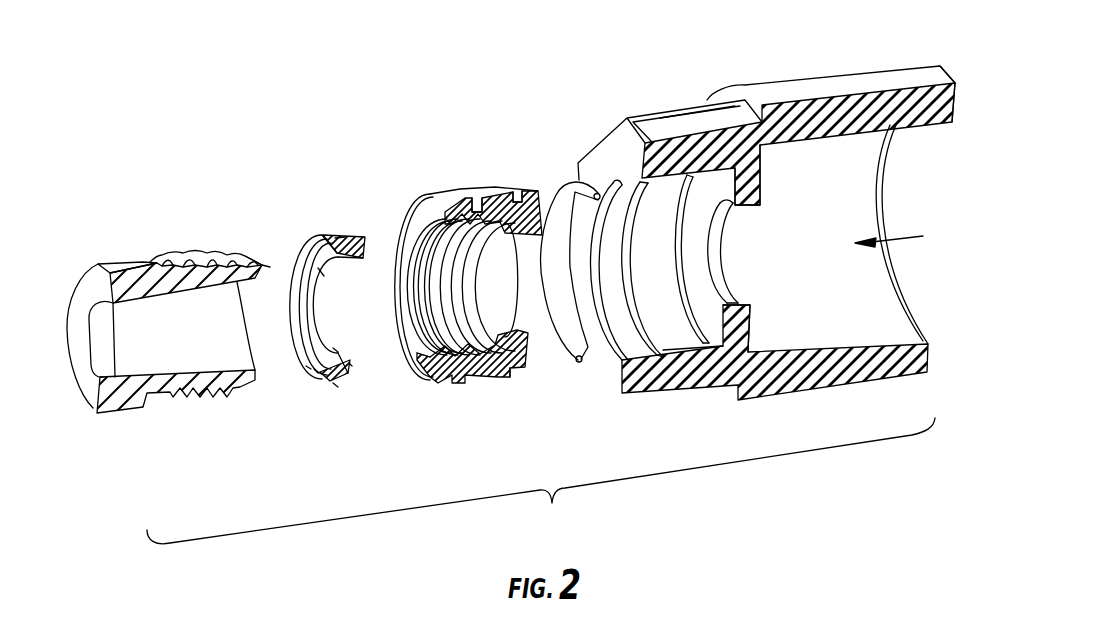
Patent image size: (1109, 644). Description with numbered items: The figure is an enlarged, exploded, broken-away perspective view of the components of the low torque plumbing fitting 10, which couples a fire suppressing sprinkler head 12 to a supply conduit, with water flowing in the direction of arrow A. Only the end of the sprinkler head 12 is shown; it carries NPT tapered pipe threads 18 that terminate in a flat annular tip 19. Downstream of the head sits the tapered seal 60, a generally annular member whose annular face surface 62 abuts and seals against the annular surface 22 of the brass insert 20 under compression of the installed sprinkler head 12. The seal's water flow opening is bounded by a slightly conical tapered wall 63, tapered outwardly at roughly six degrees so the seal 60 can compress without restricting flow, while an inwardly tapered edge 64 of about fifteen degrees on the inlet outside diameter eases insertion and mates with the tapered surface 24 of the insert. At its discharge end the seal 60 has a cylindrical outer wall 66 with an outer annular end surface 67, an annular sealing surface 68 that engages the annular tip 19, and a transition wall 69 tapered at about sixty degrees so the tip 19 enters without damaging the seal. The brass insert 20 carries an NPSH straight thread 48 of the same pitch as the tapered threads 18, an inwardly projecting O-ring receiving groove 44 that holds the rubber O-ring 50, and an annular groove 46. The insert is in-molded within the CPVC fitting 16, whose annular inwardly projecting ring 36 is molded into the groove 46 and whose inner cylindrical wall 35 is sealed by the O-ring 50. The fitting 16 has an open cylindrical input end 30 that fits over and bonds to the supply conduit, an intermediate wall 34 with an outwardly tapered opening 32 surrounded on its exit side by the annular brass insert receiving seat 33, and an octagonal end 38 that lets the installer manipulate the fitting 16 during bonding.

The low torque plumbing fitting 10 is at (541, 481).
The sprinkler head 12 is at (132, 243).
The CPVC fitting 16 is at (767, 81).
The NPT tapered pipe threads 18 is at (193, 257).
The flat annular tip 19 is at (270, 270).
The brass insert 20 is at (471, 386).
The annular surface 22 is at (507, 318).
The tapered surface 24 is at (506, 363).
The input end 30 is at (955, 97).
The opening 32 is at (733, 292).
The brass insert receiving seat 33 is at (735, 290).
The intermediate wall 34 is at (760, 181).
The inner cylindrical wall 35 is at (680, 333).
The annular inwardly projecting ring 36 is at (688, 195).
The octagonal end 38 is at (675, 123).
The O-ring receiving groove 44 is at (520, 200).
The annular groove 46 is at (472, 205).
The NPSH thread 48 is at (433, 342).
The rubber O-ring 50 is at (562, 350).
The tapered seal 60 is at (346, 219).
The annular face surface 62 is at (350, 365).
The tapered wall 63 is at (333, 350).
The inwardly tapered edge 64 is at (335, 385).
The cylindrical outer wall 66 is at (337, 237).
The outer annular end surface 67 is at (308, 368).
The annular sealing surface 68 is at (318, 270).
The transition wall 69 is at (315, 371).
The arrow A is at (908, 238).